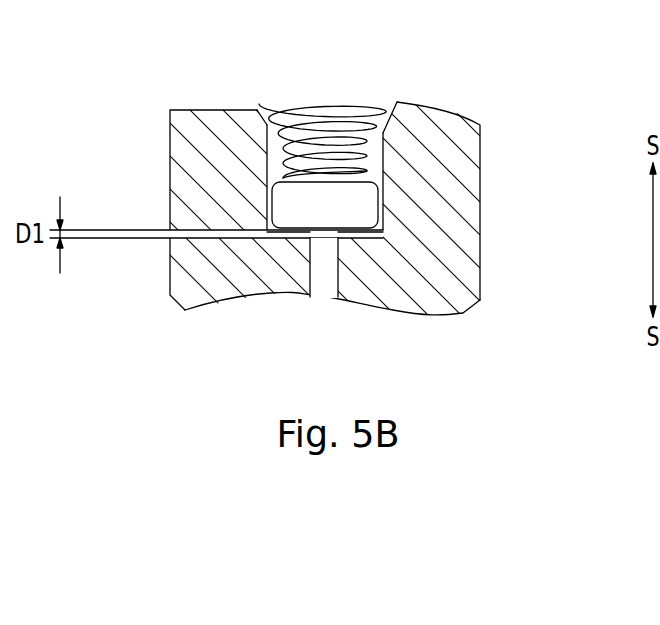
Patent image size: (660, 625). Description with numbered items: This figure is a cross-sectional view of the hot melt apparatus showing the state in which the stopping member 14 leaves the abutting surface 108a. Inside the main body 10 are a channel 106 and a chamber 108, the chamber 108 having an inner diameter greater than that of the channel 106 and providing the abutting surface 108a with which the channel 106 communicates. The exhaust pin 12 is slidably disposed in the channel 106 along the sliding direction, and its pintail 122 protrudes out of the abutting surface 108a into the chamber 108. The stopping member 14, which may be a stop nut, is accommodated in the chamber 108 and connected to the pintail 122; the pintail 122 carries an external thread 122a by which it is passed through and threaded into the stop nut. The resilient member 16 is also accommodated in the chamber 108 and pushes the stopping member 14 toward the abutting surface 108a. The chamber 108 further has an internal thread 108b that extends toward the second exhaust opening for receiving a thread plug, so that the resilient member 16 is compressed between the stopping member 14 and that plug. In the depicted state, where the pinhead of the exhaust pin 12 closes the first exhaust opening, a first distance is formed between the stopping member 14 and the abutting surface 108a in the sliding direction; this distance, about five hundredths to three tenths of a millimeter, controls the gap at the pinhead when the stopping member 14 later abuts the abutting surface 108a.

The main body 10 is at (197, 170).
The exhaust pin 12 is at (277, 293).
The stopping member 14 is at (297, 212).
The resilient member 16 is at (292, 108).
The channel 106 is at (351, 290).
The chamber 108 is at (396, 193).
The abutting surface 108a is at (343, 243).
The internal thread 108b is at (258, 109).
The pintail 122 is at (307, 177).
The external thread 122a is at (343, 173).